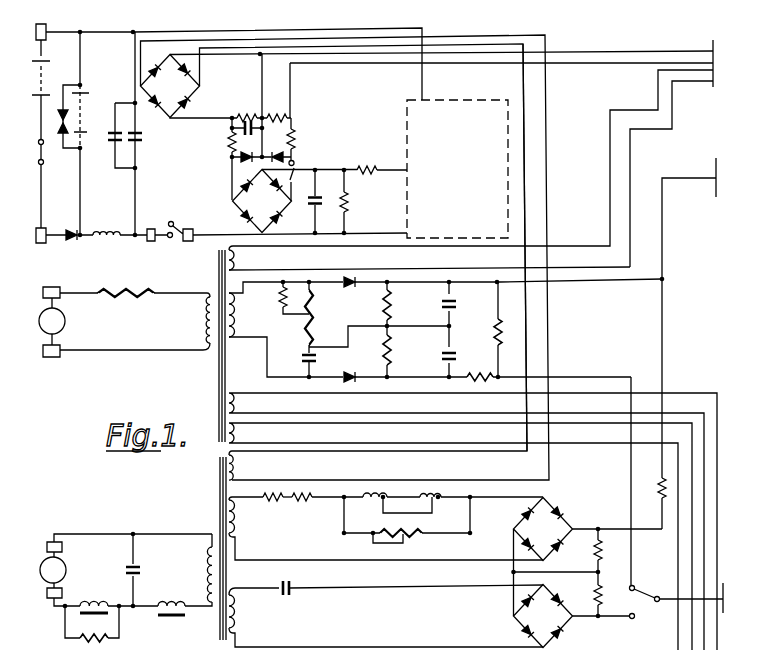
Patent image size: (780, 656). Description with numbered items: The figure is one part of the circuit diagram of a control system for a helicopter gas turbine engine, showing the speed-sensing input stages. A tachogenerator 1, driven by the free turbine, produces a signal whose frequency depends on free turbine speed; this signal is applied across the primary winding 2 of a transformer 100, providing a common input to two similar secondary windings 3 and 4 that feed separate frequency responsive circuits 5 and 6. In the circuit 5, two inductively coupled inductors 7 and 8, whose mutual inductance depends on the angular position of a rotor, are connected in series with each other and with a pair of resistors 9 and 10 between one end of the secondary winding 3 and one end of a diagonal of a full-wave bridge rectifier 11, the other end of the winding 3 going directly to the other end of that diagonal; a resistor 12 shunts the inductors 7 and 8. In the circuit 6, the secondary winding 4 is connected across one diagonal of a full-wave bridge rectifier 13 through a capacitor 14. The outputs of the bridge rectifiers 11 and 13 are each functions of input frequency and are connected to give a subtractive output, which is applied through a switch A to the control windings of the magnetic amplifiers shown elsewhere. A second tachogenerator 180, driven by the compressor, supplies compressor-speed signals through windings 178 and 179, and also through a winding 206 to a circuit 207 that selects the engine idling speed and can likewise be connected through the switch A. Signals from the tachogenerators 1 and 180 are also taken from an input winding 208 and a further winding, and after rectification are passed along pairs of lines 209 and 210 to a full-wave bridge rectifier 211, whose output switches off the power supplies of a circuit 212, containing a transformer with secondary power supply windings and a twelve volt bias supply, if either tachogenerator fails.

The tachogenerator 1 is at (66, 570).
The primary winding 2 is at (209, 576).
The secondary winding 3 is at (239, 522).
The secondary winding 4 is at (238, 616).
The frequency responsive circuit 5 is at (303, 555).
The frequency responsive circuit 6 is at (413, 613).
The inductor 7 is at (365, 500).
The inductor 8 is at (440, 500).
The resistor 9 is at (273, 500).
The resistor 10 is at (305, 500).
The full-wave bridge rectifier 11 is at (550, 537).
The resistor 12 is at (413, 534).
The full-wave bridge rectifier 13 is at (550, 624).
The capacitor 14 is at (283, 598).
The transformer 100 is at (217, 258).
The winding 178 is at (236, 431).
The winding 179 is at (236, 401).
The tachogenerator 180 is at (65, 321).
The winding 206 is at (236, 306).
The idling speed selecting circuit 207 is at (425, 284).
The input winding 208 is at (237, 467).
The lines 209 is at (607, 46).
The lines 210 is at (525, 110).
The full-wave bridge rectifier 211 is at (271, 207).
The power supply circuit 212 is at (469, 178).
The switch A is at (644, 594).